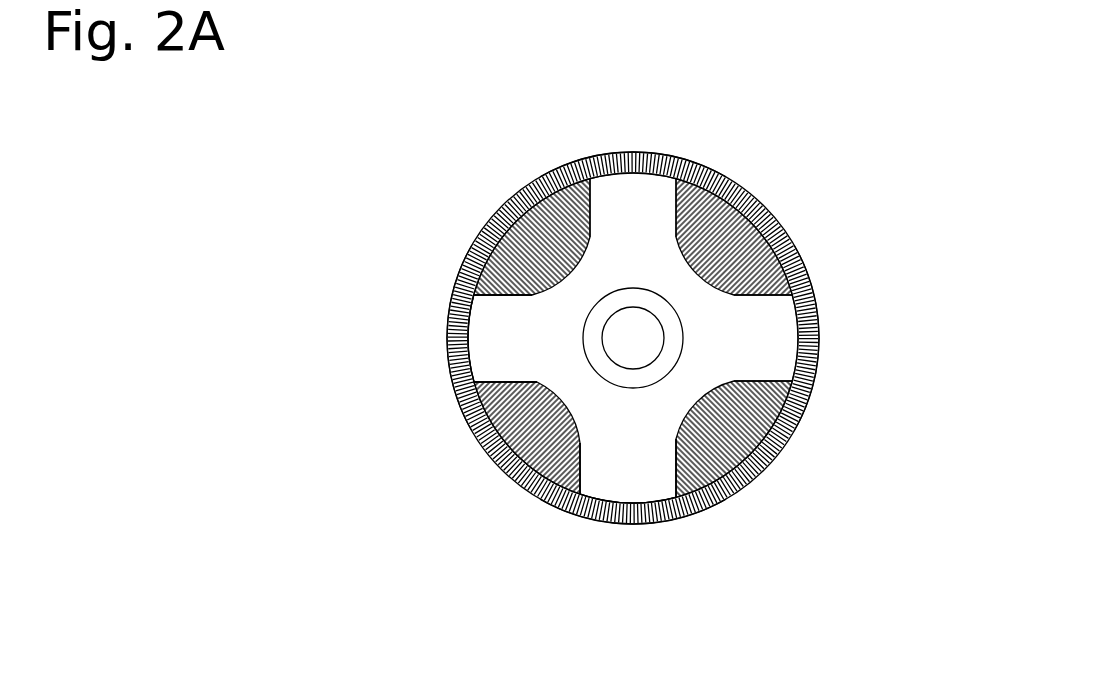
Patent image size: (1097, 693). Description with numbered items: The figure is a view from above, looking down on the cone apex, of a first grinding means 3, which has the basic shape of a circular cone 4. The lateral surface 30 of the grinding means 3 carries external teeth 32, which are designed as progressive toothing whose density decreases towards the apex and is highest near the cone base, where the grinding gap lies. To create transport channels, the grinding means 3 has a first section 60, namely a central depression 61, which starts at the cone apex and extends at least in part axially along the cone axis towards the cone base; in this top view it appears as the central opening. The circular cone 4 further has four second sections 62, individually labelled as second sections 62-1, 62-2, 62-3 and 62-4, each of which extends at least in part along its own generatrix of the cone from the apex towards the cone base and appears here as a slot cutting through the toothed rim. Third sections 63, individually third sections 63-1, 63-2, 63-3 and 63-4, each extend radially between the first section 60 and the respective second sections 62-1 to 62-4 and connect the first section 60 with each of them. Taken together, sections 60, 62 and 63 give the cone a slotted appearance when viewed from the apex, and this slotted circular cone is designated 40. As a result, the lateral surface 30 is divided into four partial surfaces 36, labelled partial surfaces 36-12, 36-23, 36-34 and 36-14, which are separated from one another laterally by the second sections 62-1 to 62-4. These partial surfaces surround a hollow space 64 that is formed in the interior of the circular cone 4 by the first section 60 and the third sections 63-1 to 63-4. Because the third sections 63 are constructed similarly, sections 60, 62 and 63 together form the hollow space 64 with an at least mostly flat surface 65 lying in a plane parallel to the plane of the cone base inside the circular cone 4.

The first grinding means 3 is at (566, 336).
The circular cone 4 is at (566, 336).
The slotted circular cone 40 is at (280, 499).
The lateral surface 30 is at (620, 336).
The external teeth 32 is at (477, 236).
The partial surfaces 36 is at (635, 323).
The partial surface 36-12 is at (507, 217).
The partial surface 36-14 is at (749, 218).
The partial surface 36-23 is at (521, 488).
The partial surface 36-34 is at (747, 487).
The first section 60 is at (592, 204).
The central depression 61 is at (642, 248).
The second section 62 is at (620, 336).
The second section 62-1 is at (642, 153).
The second section 62-2 is at (460, 287).
The second section 62-3 is at (620, 512).
The second section 62-4 is at (805, 268).
The third sections 63 is at (645, 355).
The third section 63-1 is at (633, 223).
The third section 63-2 is at (537, 358).
The third section 63-3 is at (643, 465).
The third section 63-4 is at (742, 338).
The hollow space 64 is at (607, 408).
The flat surface 65 is at (497, 342).